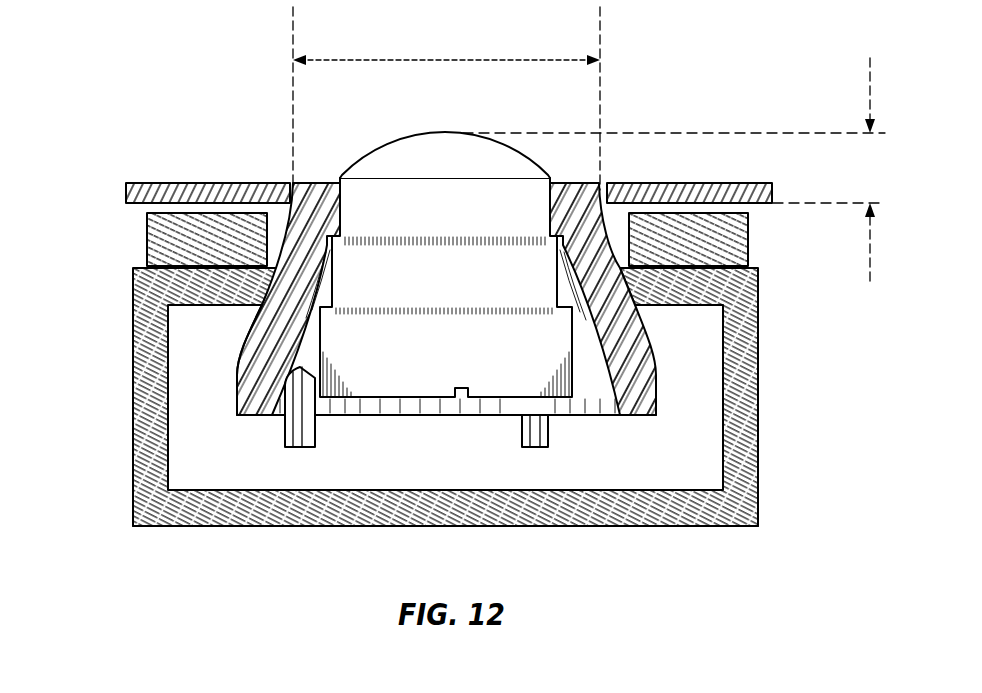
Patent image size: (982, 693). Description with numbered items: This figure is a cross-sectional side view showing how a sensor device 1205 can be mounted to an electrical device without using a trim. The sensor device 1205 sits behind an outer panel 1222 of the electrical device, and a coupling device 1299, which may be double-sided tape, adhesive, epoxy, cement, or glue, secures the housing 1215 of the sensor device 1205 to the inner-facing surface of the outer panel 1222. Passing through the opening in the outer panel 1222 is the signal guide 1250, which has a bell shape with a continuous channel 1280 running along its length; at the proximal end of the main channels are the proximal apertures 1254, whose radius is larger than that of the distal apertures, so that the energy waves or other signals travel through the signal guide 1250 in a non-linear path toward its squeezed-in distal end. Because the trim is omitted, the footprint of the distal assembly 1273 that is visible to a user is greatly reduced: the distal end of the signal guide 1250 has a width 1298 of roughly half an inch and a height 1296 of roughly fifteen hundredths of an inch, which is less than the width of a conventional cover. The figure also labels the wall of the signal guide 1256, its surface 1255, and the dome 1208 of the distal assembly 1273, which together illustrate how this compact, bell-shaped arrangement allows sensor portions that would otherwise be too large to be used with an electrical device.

The sensor device 1205 is at (152, 543).
The housing 1215 is at (247, 533).
The outer panel 1222 is at (198, 183).
The coupling device 1299 is at (147, 236).
The lens holder wall 1256 is at (315, 182).
The tapered outer surface 1255 is at (250, 322).
The continuous channel 1280 is at (635, 370).
The signal guide 1250 is at (602, 440).
The proximal apertures 1254 is at (258, 414).
The distal assembly 1273 is at (413, 111).
The dome surface 1208 is at (463, 133).
The width 1298 is at (493, 60).
The height 1296 is at (868, 95).